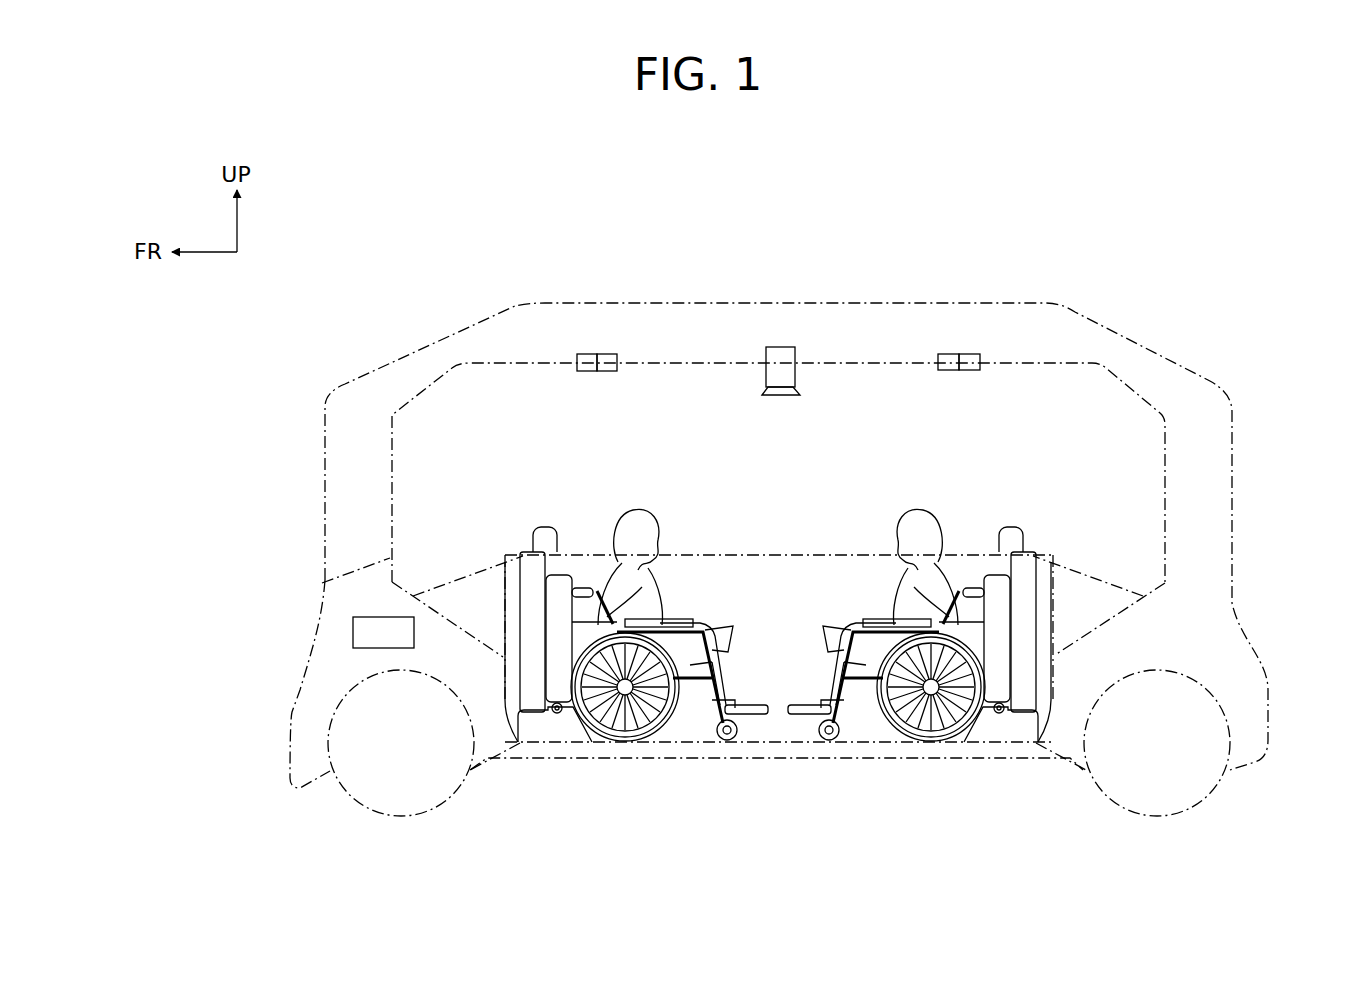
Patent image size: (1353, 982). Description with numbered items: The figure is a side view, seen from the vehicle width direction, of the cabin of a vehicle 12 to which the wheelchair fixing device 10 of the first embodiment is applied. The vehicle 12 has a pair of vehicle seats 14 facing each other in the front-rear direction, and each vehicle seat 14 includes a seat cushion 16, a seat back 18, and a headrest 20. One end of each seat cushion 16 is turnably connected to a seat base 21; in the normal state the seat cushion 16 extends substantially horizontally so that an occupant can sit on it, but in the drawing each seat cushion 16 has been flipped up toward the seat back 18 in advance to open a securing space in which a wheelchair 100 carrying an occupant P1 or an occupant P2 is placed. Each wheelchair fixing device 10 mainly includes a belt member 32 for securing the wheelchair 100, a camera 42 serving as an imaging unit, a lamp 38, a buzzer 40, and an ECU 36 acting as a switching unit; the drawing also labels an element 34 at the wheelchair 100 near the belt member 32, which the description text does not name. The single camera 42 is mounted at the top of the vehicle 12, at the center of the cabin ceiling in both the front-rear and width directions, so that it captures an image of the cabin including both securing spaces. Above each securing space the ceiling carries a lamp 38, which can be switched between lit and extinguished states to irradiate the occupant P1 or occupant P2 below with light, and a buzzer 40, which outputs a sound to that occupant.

The wheelchair fixing device 10 is at (1008, 410).
The vehicle 12 is at (1124, 296).
The vehicle seat 14 is at (520, 548).
The seat cushion 16 is at (565, 575).
The seat back 18 is at (513, 603).
The headrest 20 is at (548, 526).
The seat base 21 is at (557, 725).
The belt member 32 is at (593, 613).
The wheelchair seat frame 34 is at (620, 622).
The ECU (electronic control unit) 36 is at (365, 617).
The lamp 38 is at (607, 354).
The buzzer 40 is at (585, 354).
The camera 42 is at (778, 347).
The wheelchair 100 is at (668, 727).
The occupant P1 is at (924, 508).
The occupant P2 is at (632, 508).